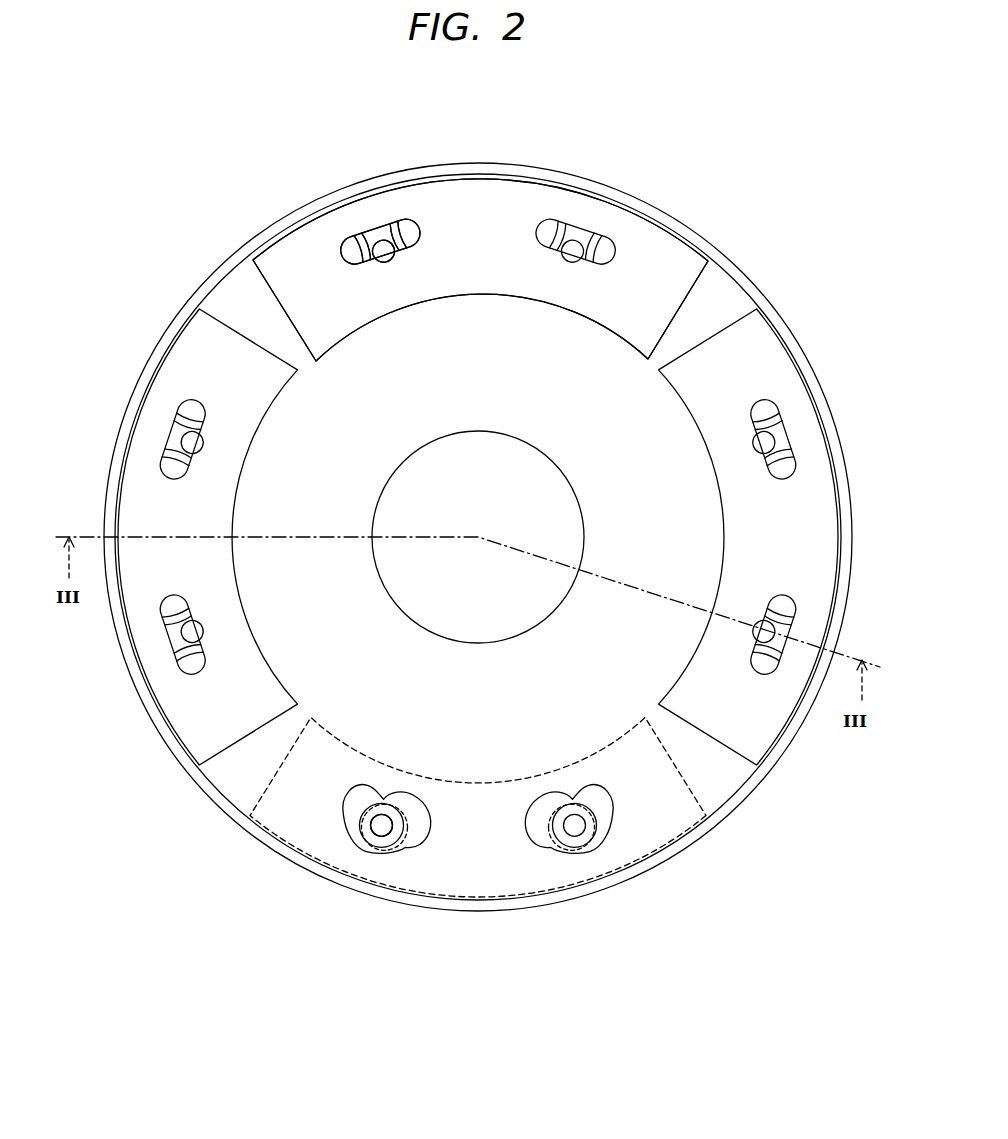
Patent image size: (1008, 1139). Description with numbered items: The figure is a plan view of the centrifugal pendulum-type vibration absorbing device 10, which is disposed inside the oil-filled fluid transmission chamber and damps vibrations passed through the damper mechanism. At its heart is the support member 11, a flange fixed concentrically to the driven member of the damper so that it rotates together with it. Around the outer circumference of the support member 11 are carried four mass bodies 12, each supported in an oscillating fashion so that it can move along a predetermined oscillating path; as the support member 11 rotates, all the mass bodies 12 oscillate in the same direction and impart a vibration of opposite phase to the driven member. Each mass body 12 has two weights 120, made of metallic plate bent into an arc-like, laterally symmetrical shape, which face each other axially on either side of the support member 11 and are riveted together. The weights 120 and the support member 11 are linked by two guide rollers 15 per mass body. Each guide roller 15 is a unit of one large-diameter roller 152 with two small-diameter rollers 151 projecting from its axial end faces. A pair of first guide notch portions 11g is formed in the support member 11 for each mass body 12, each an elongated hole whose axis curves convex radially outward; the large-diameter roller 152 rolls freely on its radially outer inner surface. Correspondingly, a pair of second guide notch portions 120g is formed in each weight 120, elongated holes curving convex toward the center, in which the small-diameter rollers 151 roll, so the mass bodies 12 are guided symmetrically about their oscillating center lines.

The centrifugal pendulum-type vibration absorbing device 10 is at (699, 175).
The support member 11 is at (537, 442).
The first guide notch portion 11g is at (426, 831).
The mass body 12 is at (693, 300).
The guide roller 15 is at (268, 120).
The small-diameter roller 151 is at (364, 234).
The large-diameter roller 152 is at (357, 244).
The weight 120 is at (479, 193).
The second guide notch portion 120g is at (578, 228).